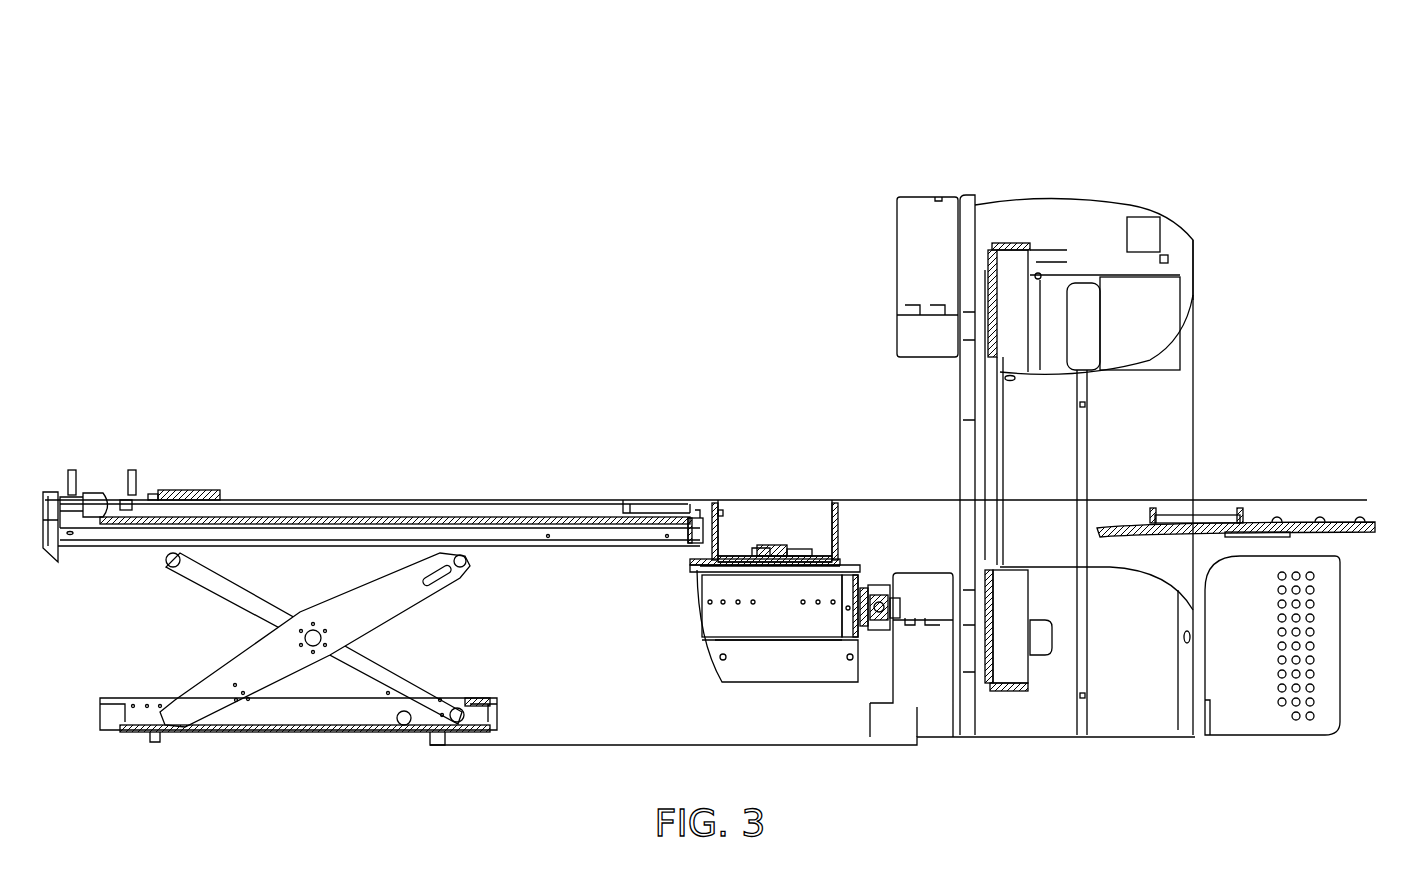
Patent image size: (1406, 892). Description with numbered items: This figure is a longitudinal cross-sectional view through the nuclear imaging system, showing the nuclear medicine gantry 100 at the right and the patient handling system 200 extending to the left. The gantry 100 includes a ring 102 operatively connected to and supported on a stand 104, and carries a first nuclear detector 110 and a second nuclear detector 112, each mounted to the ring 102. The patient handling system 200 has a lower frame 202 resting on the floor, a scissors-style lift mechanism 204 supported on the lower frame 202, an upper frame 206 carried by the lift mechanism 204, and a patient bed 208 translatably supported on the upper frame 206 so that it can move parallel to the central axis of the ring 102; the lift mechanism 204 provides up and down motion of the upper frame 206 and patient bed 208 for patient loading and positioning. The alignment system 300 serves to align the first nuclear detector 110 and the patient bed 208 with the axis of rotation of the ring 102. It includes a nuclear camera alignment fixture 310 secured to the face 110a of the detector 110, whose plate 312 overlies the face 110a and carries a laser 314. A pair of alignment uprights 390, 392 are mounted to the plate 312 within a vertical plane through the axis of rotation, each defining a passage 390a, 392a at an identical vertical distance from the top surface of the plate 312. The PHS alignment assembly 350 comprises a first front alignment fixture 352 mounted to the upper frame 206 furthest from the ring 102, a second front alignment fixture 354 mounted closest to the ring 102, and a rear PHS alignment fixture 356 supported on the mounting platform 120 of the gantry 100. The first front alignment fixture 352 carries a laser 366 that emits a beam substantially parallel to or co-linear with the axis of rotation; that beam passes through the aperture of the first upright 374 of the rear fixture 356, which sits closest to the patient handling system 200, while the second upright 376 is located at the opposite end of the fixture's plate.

The nuclear medicine gantry 100 is at (1114, 183).
The ring 102 is at (1110, 215).
The stand 104 is at (1165, 732).
The first nuclear detector 110 is at (815, 670).
The face 110a is at (705, 585).
The second nuclear detector 112 is at (902, 219).
The mounting platform 120 is at (1360, 535).
The patient handling system 200 is at (395, 422).
The lower frame 202 is at (226, 735).
The lift mechanism 204 is at (355, 682).
The upper frame 206 is at (118, 558).
The patient bed 208 is at (302, 514).
The alignment system 300 is at (680, 420).
The nuclear camera alignment fixture 310 is at (737, 545).
The plate 312 is at (765, 550).
The laser 314 is at (790, 545).
The PHS alignment assembly 350 is at (168, 430).
The first front alignment fixture 352 is at (208, 482).
The second front alignment fixture 354 is at (625, 497).
The rear PHS alignment fixture 356 is at (1258, 510).
The laser 366 is at (160, 490).
The first upright 374 is at (1153, 508).
The second upright 376 is at (1252, 508).
The alignment upright 390 is at (707, 537).
The passage 390a is at (715, 500).
The alignment upright 392 is at (840, 538).
The passage 392a is at (833, 500).